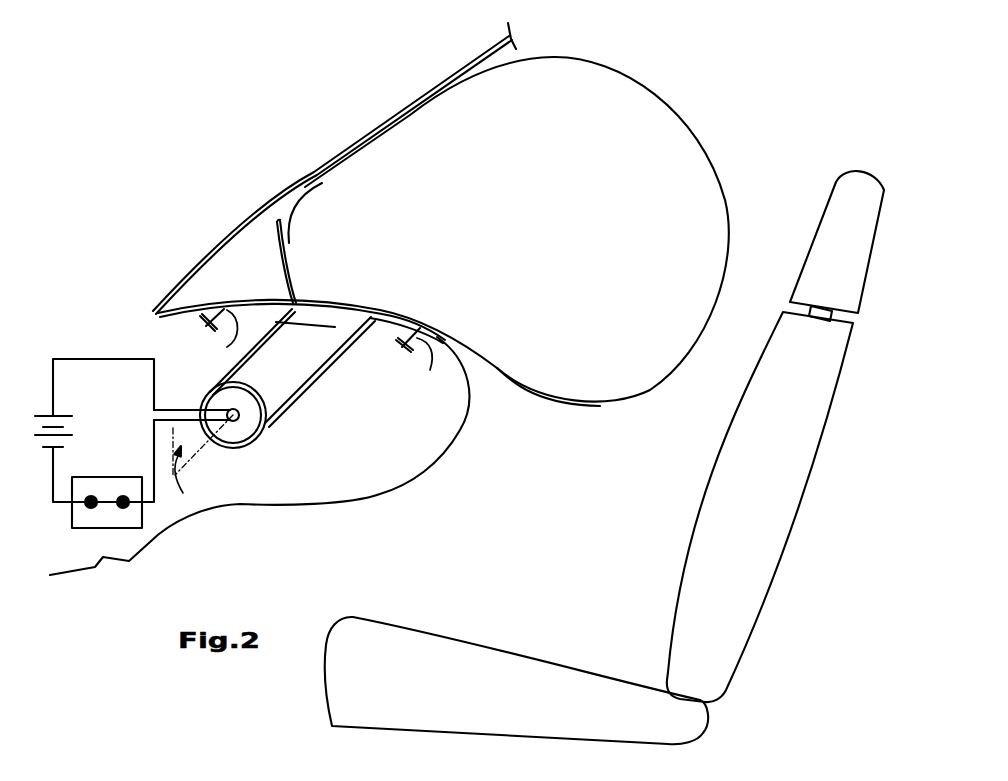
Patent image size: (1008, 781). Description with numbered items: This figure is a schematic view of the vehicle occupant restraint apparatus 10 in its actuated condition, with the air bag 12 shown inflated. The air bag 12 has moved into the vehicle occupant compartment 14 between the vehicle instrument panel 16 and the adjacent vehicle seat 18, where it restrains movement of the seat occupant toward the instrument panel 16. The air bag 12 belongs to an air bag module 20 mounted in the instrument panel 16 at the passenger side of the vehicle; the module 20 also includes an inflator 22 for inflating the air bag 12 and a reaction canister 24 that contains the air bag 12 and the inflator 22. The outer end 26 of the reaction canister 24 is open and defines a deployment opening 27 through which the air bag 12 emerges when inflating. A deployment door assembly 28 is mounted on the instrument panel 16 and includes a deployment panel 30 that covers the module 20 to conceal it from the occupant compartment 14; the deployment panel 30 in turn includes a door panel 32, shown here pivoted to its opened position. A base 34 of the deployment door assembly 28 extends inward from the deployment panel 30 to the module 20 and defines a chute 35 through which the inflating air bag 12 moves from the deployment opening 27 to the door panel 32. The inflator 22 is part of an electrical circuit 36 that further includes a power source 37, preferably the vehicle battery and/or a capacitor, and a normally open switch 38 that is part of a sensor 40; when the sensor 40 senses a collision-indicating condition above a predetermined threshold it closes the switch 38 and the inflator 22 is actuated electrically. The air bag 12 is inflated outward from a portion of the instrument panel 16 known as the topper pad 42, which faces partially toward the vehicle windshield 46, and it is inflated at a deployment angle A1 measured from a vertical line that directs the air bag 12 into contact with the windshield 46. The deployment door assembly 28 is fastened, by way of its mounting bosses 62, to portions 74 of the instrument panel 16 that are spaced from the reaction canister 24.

The vehicle occupant restraint apparatus 10 is at (112, 276).
The inflatable vehicle occupant restraint 12 is at (707, 152).
The vehicle occupant compartment 14 is at (780, 250).
The vehicle instrument panel 16 is at (483, 412).
The vehicle seat 18 is at (718, 447).
The air bag module 20 is at (296, 427).
The inflator 22 is at (223, 435).
The reaction canister 24 is at (223, 370).
The outer end 26 is at (335, 327).
The deployment opening 27 is at (338, 318).
The deployment door assembly 28 is at (431, 314).
The deployment panel 30 is at (382, 318).
The door panel 32 is at (278, 240).
The base 34 is at (275, 316).
The chute 35 is at (304, 300).
The electrical circuit 36 is at (63, 346).
The power source 37 is at (65, 417).
The normally open switch 38 is at (108, 508).
The sensor 40 is at (88, 477).
The topper pad 42 is at (500, 368).
The vehicle windshield 46 is at (207, 265).
The mounting boss 62 is at (324, 355).
The portions of the instrument panel 74 is at (193, 314).
The deployment angle A1 is at (191, 465).